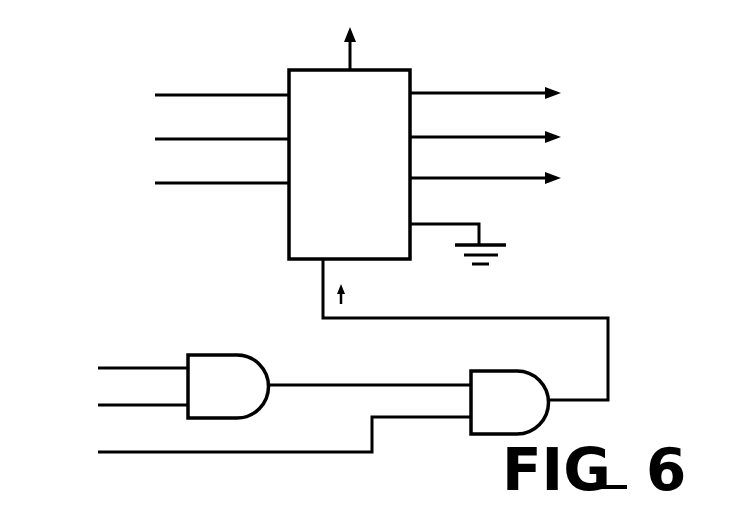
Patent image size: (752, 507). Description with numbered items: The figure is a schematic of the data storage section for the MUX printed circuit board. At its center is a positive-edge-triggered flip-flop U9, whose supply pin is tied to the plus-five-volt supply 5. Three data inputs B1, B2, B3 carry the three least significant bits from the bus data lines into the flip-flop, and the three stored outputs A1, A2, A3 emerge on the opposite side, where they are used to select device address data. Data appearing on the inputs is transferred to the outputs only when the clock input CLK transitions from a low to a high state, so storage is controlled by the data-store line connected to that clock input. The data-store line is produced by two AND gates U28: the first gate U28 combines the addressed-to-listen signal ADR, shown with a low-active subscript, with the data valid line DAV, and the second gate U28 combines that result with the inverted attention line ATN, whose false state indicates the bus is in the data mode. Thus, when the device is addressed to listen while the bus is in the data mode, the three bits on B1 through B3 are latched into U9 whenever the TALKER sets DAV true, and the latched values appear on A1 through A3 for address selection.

The positive-edge-triggered flip-flop U9 is at (357, 202).
The AND gate U28 is at (289, 411).
The clock input CLK is at (452, 317).
The +5 volt supply 5 is at (343, 37).
The data line bit B1 is at (198, 96).
The data line bit B2 is at (198, 140).
The data line bit B3 is at (198, 185).
The output bit A1 is at (507, 92).
The output bit A2 is at (507, 135).
The output bit A3 is at (507, 177).
The addressed-to-listen signal ADR_L ADR is at (110, 370).
The data valid line DAV is at (110, 404).
The attention line ATN is at (90, 437).